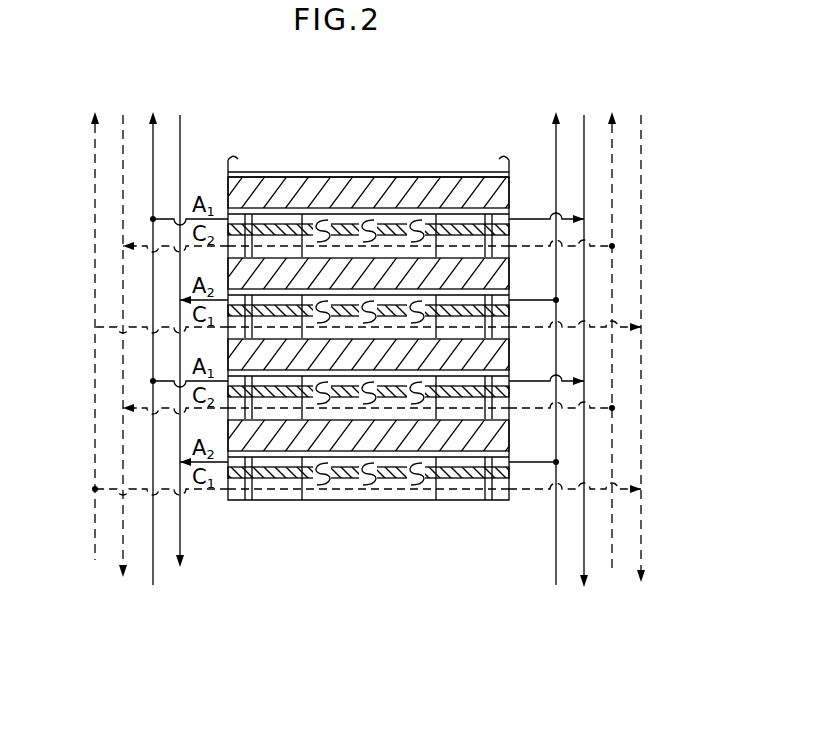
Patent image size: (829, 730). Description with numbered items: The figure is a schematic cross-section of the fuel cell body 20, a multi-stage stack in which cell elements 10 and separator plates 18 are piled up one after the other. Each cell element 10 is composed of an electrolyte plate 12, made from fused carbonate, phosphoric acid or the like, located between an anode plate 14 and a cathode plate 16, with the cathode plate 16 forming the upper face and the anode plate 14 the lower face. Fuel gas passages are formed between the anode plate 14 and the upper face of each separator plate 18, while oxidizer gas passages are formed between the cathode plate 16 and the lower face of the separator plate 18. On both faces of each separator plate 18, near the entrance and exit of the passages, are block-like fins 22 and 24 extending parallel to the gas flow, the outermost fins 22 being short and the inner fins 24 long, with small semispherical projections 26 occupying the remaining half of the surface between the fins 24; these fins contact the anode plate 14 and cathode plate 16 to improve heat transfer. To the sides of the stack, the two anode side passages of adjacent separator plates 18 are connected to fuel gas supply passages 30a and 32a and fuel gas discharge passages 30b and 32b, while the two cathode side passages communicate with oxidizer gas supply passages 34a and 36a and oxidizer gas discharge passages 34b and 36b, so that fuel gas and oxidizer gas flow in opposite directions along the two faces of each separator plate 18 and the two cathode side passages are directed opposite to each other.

The cell element 10 is at (506, 276).
The electrolyte plate 12 is at (352, 172).
The anode plate 14 is at (507, 203).
The cathode plate 16 is at (453, 177).
The separator plate 18 is at (504, 316).
The body of the fuel cell 20 is at (268, 162).
The outermost fins 22 is at (239, 498).
The fins 24 is at (290, 494).
The small semispherical projections 26 is at (372, 493).
The fuel gas supply passage 30a is at (152, 576).
The fuel gas discharge passage 30b is at (588, 565).
The fuel gas supply passage 32a is at (554, 575).
The fuel gas discharge passage 32b is at (184, 552).
The oxidizer gas supply passage 34a is at (95, 560).
The oxidizer gas discharge passage 34b is at (641, 545).
The oxidizer gas supply passage 36a is at (612, 570).
The oxidizer gas discharge passage 36b is at (122, 580).